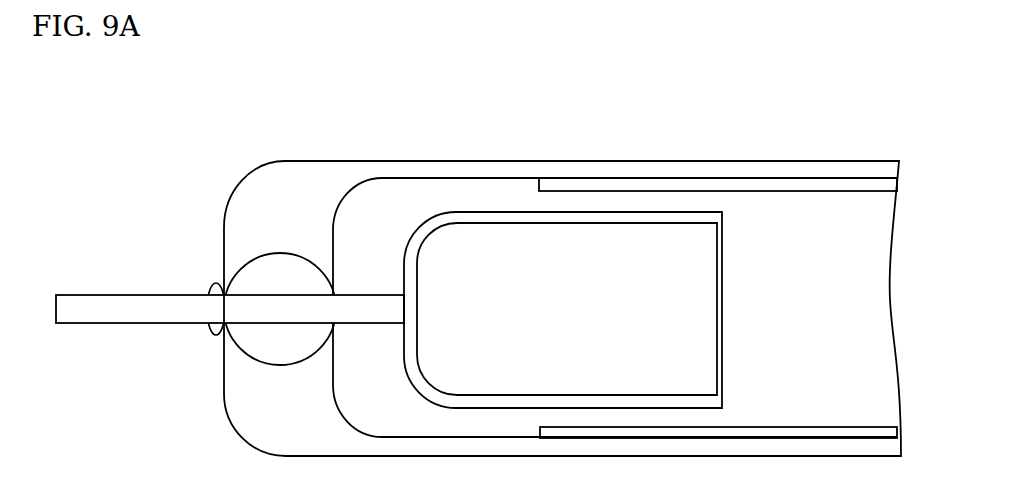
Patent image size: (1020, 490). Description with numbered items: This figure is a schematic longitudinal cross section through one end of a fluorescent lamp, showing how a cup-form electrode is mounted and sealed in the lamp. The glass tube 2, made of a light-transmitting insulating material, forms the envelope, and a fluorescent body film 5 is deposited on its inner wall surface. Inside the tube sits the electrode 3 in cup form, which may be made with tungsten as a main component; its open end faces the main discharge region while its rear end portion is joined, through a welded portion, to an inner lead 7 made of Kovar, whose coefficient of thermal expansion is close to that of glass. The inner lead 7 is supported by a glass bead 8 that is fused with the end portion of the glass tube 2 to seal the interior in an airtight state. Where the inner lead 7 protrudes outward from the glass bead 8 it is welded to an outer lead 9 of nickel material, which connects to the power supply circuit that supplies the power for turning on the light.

The glass tube 2 is at (738, 160).
The electrode in cup form 3 is at (584, 210).
The fluorescent body film 5 is at (820, 178).
The inner lead 7 is at (373, 295).
The glass bead 8 is at (281, 253).
The outer lead 9 is at (97, 305).